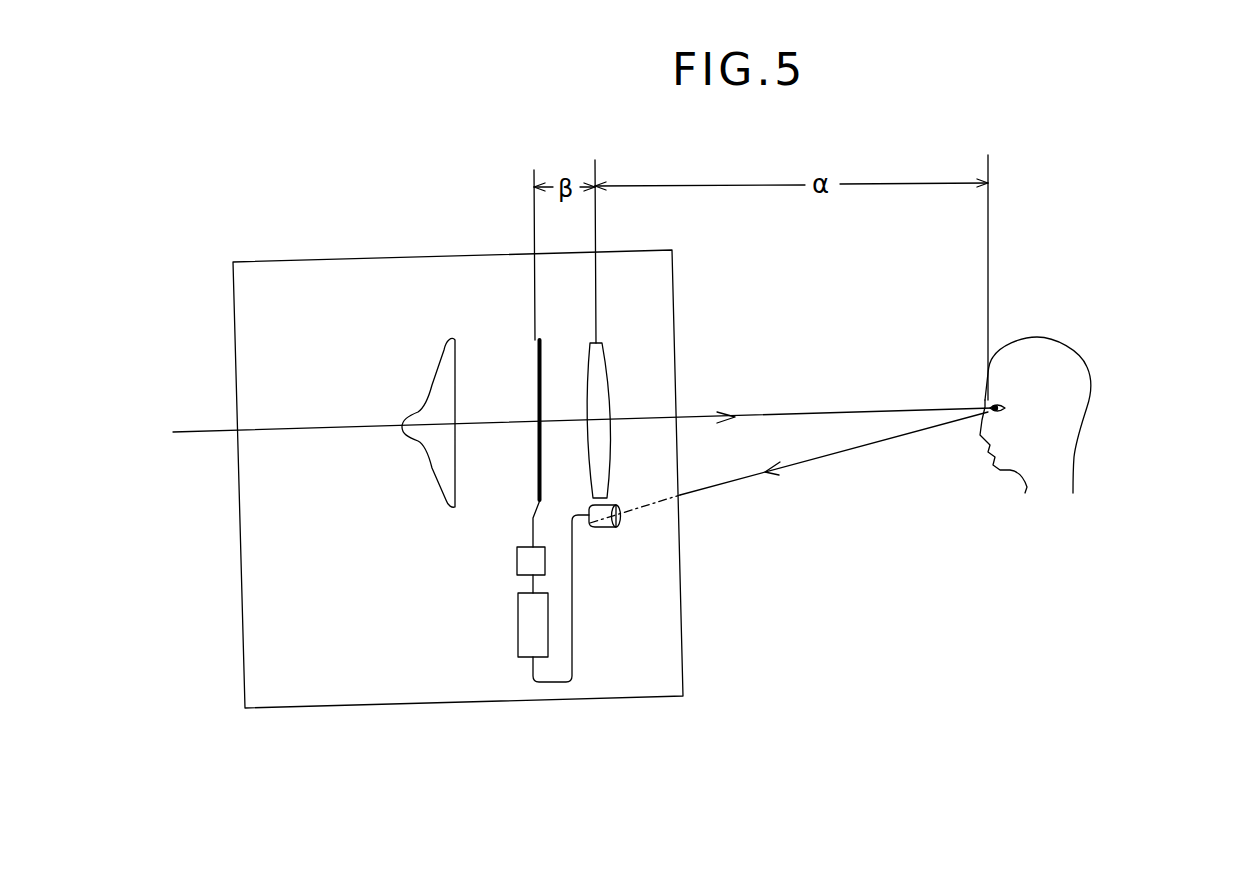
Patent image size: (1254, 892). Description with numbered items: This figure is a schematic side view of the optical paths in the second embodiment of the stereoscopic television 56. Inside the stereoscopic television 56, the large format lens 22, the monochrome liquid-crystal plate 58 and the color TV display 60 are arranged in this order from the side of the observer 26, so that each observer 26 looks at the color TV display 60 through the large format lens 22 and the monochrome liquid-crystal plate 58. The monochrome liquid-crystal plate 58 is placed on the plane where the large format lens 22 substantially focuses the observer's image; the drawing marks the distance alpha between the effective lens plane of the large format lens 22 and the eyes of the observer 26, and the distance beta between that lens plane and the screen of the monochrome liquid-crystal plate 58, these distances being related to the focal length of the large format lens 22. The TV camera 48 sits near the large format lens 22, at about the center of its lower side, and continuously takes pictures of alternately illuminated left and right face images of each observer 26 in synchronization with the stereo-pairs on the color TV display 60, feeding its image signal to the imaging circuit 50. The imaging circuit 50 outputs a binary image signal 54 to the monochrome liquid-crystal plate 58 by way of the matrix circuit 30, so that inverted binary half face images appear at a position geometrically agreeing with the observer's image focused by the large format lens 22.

The large format lens 22 is at (598, 358).
The observer 26 is at (1070, 458).
The matrix circuit 30 is at (538, 562).
The TV camera 48 is at (622, 522).
The imaging circuit 50 is at (540, 637).
The binary image signal 54 is at (205, 432).
The stereoscopic television 56 is at (670, 243).
The monochrome liquid-crystal plate 58 is at (540, 340).
The color TV display 60 is at (445, 360).